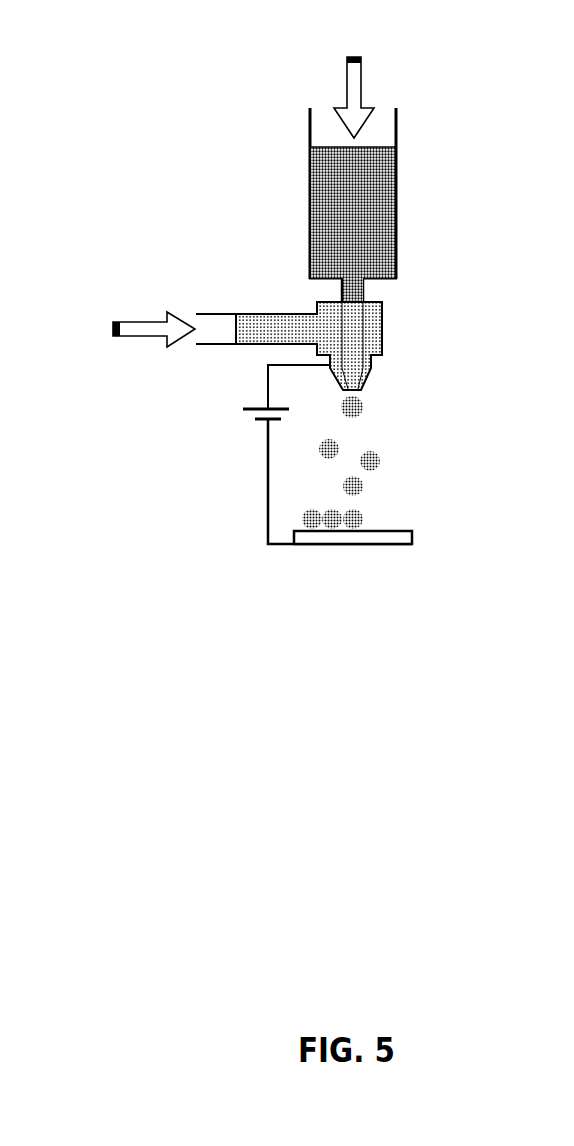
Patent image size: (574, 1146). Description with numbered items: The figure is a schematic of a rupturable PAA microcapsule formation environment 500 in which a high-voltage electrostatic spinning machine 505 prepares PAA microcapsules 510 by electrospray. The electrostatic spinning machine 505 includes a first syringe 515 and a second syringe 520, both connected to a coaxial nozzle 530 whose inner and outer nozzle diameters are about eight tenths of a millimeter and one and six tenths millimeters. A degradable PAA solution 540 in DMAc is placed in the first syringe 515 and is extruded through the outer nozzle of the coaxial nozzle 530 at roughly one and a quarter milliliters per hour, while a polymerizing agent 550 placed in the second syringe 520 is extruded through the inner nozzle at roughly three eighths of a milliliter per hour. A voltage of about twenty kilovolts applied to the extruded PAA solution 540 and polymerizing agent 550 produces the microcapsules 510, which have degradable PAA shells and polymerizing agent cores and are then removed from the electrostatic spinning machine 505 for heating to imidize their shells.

The rupturable PAA microcapsule formation environment 500 is at (123, 40).
The high-voltage electrostatic spinning machine 505 is at (261, 72).
The second syringe 520 is at (397, 127).
The polymerizing agent 550 is at (323, 205).
The degradable PAA solution 540 is at (271, 326).
The first syringe 515 is at (212, 306).
The coaxial nozzle 530 is at (386, 376).
The PAA microcapsules 510 is at (394, 486).